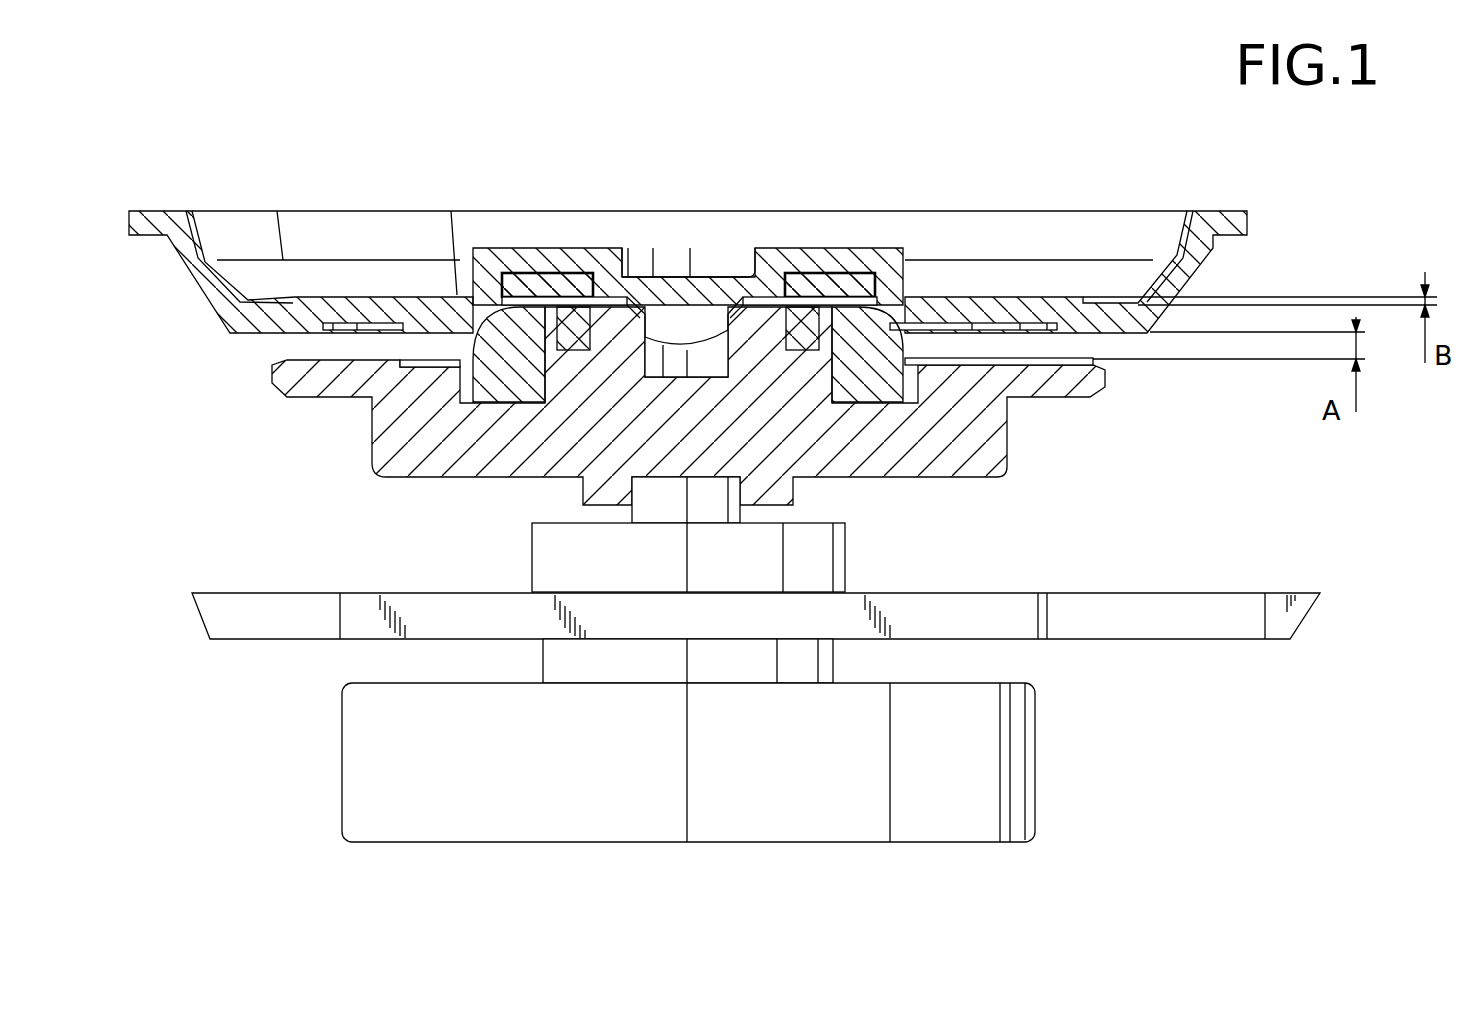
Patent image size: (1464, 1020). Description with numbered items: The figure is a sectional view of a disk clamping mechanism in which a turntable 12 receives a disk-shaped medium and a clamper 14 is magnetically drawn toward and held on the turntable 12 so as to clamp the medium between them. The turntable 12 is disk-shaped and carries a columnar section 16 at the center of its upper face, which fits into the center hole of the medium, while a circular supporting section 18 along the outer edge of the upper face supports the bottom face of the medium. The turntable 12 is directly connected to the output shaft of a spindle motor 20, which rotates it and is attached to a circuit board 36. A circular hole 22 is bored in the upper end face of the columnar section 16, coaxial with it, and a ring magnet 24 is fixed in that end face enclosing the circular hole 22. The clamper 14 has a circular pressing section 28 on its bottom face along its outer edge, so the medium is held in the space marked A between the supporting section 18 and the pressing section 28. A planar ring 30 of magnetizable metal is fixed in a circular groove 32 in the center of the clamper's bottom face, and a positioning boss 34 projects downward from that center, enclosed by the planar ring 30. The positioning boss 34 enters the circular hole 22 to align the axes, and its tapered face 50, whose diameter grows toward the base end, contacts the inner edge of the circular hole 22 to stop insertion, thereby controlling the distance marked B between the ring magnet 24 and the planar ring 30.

The turntable 12 is at (1005, 449).
The clamper 14 is at (1222, 212).
The columnar section 16 is at (772, 302).
The supporting section 18 is at (1073, 360).
The spindle motor 20 is at (833, 745).
The circular hole 22 is at (683, 325).
The ring magnet 24 is at (804, 340).
The pressing section 28 is at (1133, 333).
The planar ring 30 is at (577, 290).
The circular groove 32 is at (540, 277).
The positioning boss 34 is at (620, 435).
The circuit board 36 is at (1222, 640).
The tapered face 50 is at (767, 327).